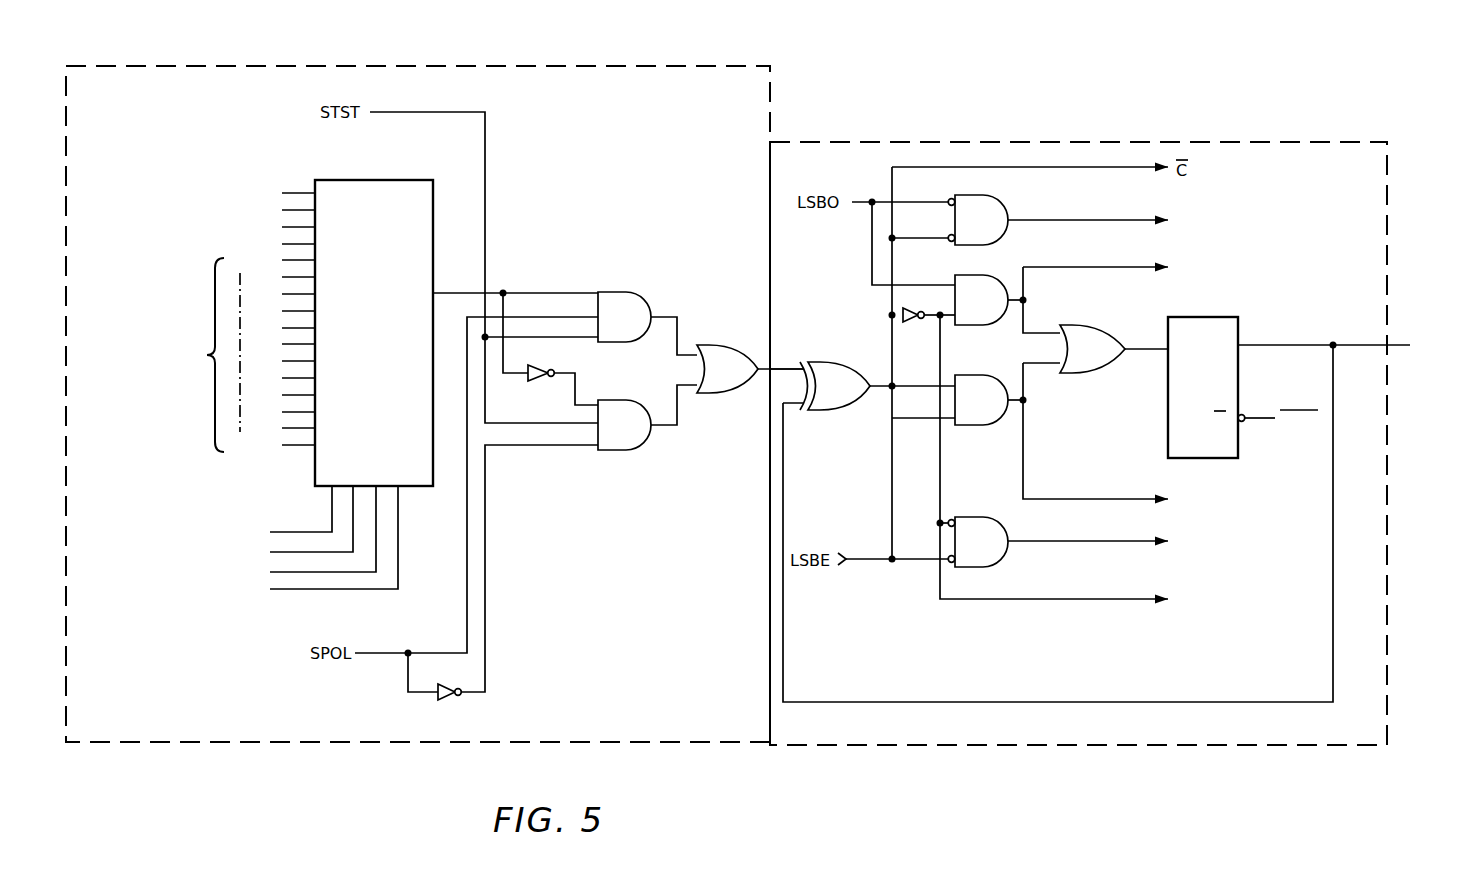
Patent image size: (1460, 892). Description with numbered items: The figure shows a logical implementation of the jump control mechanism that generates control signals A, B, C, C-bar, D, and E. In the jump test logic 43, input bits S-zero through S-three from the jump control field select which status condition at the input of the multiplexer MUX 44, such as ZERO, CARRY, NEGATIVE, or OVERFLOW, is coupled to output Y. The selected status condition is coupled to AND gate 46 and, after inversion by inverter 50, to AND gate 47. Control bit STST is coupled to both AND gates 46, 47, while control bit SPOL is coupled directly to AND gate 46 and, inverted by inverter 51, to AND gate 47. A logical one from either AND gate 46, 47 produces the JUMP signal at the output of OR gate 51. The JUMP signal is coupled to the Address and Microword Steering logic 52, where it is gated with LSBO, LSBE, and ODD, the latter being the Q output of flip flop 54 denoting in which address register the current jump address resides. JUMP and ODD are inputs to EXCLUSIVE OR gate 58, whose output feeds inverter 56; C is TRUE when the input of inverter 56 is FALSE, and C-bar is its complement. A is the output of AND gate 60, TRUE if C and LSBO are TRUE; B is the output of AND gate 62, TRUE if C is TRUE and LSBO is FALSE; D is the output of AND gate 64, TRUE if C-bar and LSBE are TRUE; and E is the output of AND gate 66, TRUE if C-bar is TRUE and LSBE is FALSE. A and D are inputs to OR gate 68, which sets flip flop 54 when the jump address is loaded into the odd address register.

The jump test logic 43 is at (721, 750).
The multiplexer MUX 44 is at (386, 180).
The AND gate 46 is at (614, 292).
The AND gate 47 is at (615, 400).
The inverter 50 is at (546, 369).
The OR gate / inverter 51 is at (714, 346).
The Address and Microword Steering logic 52 is at (1380, 750).
The flip flop 54 is at (1194, 317).
The inverter 56 is at (910, 312).
The EXCLUSIVE OR gate 58 is at (842, 370).
The AND gate 60 is at (975, 275).
The AND gate 62 is at (998, 210).
The AND gate 64 is at (982, 378).
The AND gate 66 is at (972, 517).
The OR gate 68 is at (1082, 324).